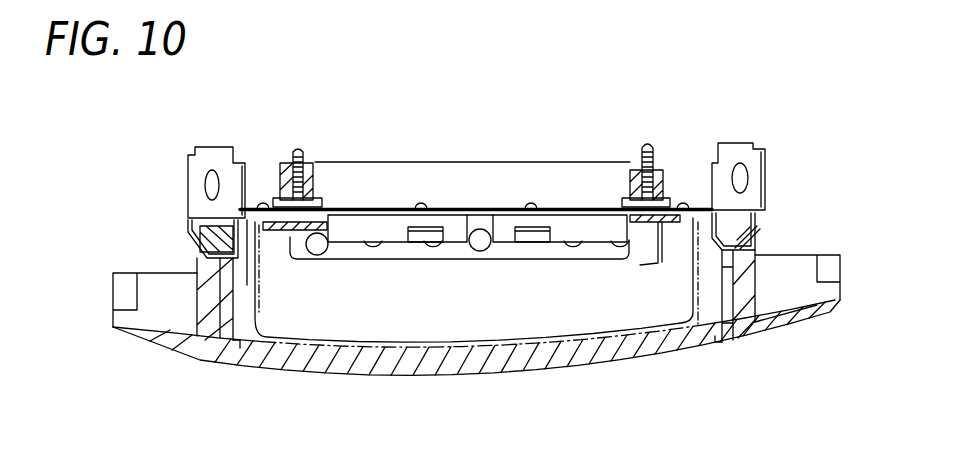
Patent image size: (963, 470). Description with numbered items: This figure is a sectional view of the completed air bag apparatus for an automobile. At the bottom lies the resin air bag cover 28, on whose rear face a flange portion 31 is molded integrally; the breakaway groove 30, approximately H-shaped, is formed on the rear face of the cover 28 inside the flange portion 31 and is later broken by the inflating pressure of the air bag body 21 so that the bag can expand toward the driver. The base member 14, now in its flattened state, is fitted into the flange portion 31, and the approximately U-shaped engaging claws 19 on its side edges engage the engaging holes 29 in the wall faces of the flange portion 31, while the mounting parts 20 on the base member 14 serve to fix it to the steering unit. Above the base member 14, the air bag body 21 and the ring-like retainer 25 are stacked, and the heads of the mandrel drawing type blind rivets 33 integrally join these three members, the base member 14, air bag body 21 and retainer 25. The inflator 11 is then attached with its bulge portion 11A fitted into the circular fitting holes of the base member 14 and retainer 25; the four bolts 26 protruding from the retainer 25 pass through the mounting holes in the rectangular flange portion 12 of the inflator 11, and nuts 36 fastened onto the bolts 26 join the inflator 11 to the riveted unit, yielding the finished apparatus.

The inflator 11 is at (530, 163).
The bulge portion 11A is at (397, 254).
The flange portion 12 is at (390, 208).
The base member 14 is at (274, 262).
The engaging claws 19 is at (200, 243).
The mounting parts 20 is at (197, 183).
The air bag body 21 is at (364, 338).
The retainer 25 is at (662, 224).
The bolts 26 is at (301, 150).
The air bag cover 28 is at (474, 376).
The engaging holes 29 is at (213, 240).
The breakaway groove 30 is at (237, 348).
The flange portion 31 is at (210, 306).
The blind rivets 33 is at (259, 207).
The nuts 36 is at (280, 205).